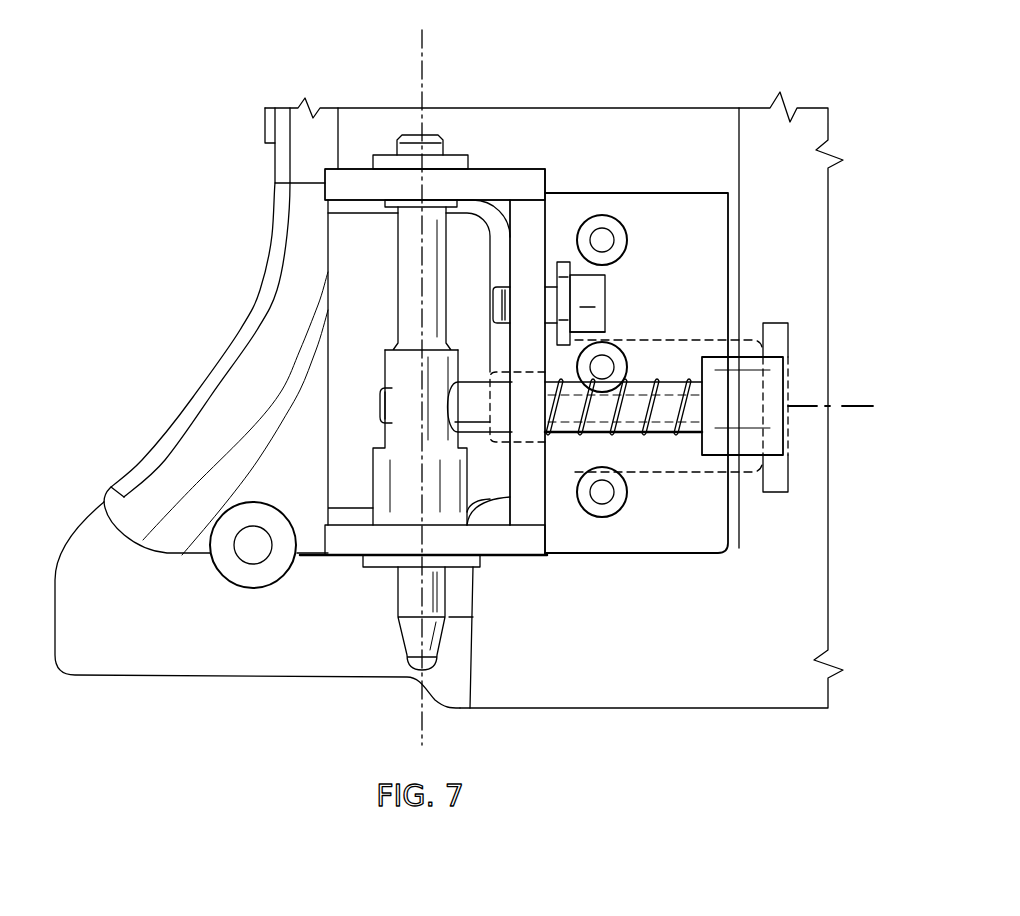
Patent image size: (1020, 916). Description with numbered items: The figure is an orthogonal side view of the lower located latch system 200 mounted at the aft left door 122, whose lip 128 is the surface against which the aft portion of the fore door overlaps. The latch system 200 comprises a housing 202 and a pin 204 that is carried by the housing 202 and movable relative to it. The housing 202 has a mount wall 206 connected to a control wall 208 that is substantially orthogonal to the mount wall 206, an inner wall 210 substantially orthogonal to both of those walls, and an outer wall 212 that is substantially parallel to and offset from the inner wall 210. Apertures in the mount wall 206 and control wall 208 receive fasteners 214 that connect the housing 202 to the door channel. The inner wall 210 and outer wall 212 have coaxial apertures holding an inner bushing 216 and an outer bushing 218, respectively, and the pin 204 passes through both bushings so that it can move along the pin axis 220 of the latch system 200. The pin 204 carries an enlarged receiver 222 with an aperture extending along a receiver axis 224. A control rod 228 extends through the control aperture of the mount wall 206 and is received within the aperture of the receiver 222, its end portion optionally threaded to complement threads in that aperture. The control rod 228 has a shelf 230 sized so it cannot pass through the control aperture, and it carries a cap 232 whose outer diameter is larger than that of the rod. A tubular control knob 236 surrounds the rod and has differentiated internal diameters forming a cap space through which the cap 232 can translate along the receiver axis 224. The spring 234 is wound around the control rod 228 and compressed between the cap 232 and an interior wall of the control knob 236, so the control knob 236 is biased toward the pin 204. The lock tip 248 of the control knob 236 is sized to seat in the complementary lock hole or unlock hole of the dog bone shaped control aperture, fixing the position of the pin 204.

The aft left door 122 is at (643, 708).
The lip 128 is at (243, 678).
The latch system 200 is at (572, 84).
The housing 202 is at (546, 183).
The pin 204 is at (441, 149).
The mount wall 206 is at (326, 472).
The control wall 208 is at (545, 525).
The inner wall 210 is at (377, 188).
The outer wall 212 is at (333, 548).
The fasteners 214 is at (596, 286).
The inner bushing 216 is at (387, 160).
The outer bushing 218 is at (383, 563).
The pin axis 220 is at (425, 50).
The receiver 222 is at (393, 365).
The receiver axis 224 is at (852, 406).
The control rod 228 is at (384, 416).
The shelf 230 is at (478, 412).
The cap 232 is at (713, 363).
The spring 234 is at (670, 436).
The control knob 236 is at (777, 330).
The lock tip 248 is at (658, 463).